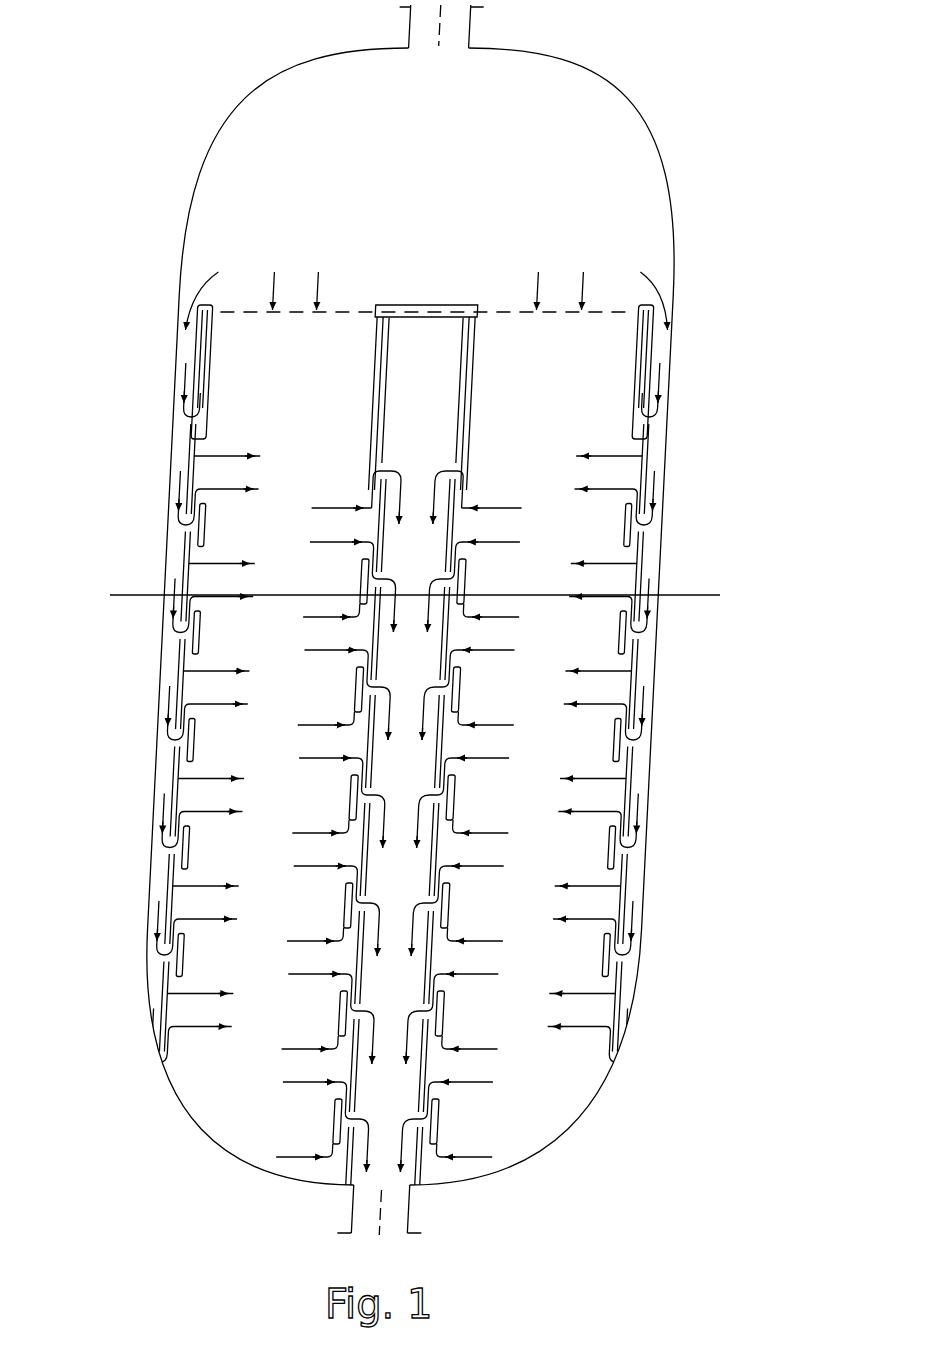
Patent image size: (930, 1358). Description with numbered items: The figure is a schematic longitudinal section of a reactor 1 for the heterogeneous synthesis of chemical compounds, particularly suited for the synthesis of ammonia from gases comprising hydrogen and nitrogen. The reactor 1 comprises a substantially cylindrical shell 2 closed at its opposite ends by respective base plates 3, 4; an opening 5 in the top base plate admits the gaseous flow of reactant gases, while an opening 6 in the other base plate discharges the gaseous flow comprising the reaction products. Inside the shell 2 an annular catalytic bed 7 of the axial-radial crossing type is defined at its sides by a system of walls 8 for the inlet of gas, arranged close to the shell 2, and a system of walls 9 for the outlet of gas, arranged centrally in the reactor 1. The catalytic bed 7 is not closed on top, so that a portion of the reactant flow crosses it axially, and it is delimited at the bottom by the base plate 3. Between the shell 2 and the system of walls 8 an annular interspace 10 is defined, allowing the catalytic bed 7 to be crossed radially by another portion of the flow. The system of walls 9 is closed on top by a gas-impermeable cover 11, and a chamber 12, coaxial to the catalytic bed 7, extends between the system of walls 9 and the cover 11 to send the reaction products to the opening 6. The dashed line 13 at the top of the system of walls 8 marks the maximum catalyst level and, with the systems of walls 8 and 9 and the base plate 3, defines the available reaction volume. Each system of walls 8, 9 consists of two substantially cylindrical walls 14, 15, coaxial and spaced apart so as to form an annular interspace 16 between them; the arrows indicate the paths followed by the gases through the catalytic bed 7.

The reactor 1 is at (429, 619).
The cylindrical shell 2 is at (160, 660).
The base plate 3 is at (553, 1139).
The base plate 4 is at (607, 117).
The opening 5 is at (410, 27).
The opening 6 is at (352, 1210).
The annular catalytic bed 7 is at (325, 330).
The system of walls for the inlet of gas 8 is at (163, 768).
The system of walls for the outlet of gas 9 is at (346, 897).
The annular interspace 10 is at (183, 425).
The cover 11 is at (430, 305).
The chamber 12 is at (410, 785).
The dashed line 13 is at (238, 312).
The cylindrical wall 14 is at (197, 340).
The cylindrical wall 15 is at (200, 340).
The annular interspace 16 is at (190, 473).